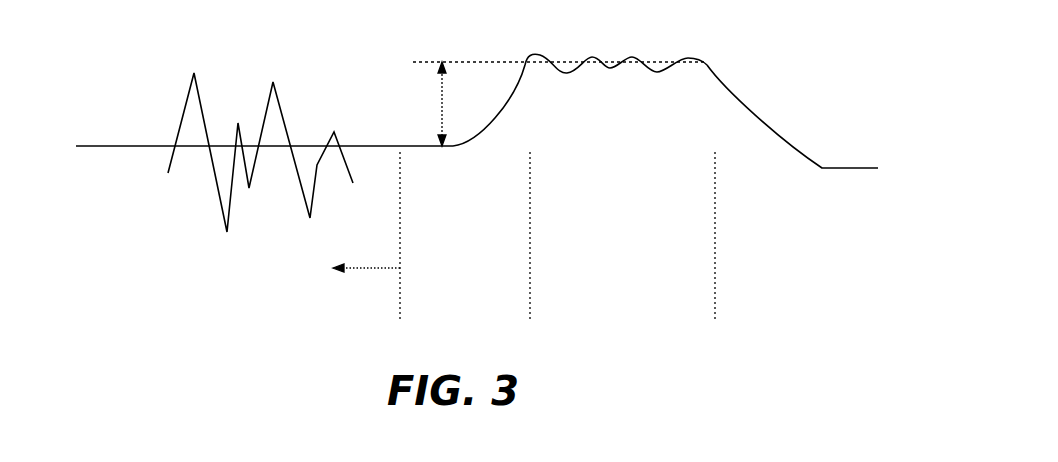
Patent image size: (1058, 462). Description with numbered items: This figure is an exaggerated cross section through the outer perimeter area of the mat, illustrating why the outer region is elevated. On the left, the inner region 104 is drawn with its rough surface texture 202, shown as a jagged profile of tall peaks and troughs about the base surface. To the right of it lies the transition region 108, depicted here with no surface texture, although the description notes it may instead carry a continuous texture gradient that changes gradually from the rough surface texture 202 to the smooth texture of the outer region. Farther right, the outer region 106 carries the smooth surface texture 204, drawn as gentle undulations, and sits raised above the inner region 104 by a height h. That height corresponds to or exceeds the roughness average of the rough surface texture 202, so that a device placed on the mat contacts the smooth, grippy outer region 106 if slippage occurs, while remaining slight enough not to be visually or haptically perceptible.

The inner region 104 is at (304, 278).
The outer region 106 is at (701, 172).
The transition region 108 is at (553, 193).
The rough surface texture 202 is at (183, 117).
The smooth surface texture 204 is at (632, 55).